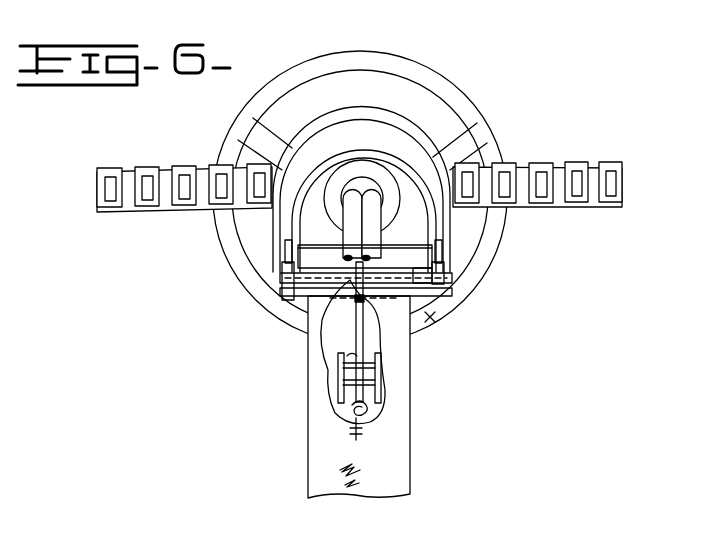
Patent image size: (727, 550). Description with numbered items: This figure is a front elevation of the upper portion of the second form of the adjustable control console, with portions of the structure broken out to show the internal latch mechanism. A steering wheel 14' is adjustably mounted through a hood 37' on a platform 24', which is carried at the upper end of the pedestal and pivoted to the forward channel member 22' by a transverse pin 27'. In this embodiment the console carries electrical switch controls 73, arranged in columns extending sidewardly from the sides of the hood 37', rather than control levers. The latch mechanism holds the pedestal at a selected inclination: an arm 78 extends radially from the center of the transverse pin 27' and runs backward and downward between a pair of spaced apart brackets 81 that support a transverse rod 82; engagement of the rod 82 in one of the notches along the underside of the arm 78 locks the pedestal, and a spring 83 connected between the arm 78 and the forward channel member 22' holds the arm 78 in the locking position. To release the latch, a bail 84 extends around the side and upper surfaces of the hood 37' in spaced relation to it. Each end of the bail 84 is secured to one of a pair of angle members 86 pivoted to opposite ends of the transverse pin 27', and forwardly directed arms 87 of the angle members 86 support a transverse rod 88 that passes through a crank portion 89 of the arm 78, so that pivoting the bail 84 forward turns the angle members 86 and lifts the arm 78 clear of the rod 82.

The steering wheel 14' is at (360, 191).
The bail 84 is at (393, 117).
The hood 37' is at (364, 197).
The electrical switch controls 73 is at (583, 156).
The platform 24' is at (418, 252).
The angle members 86 is at (285, 270).
The forwardly directed arms 87 is at (290, 292).
The transverse rod 88 is at (452, 295).
The transverse pin 27' is at (448, 306).
The arm 78 is at (376, 338).
The brackets 81 is at (382, 378).
The transverse rod 82 is at (338, 378).
The spring 83 is at (372, 410).
The crank portion 89 is at (312, 330).
The forward channel member 22' is at (389, 397).